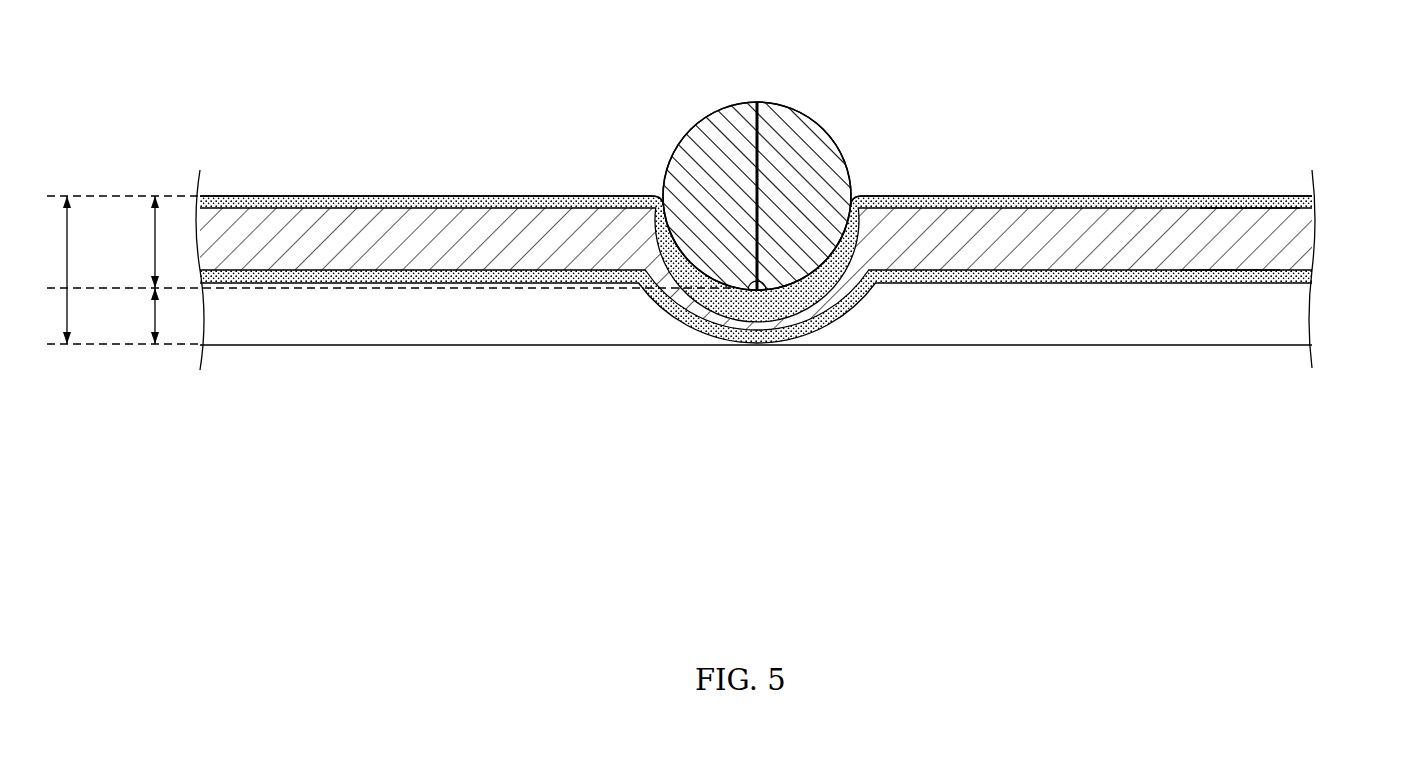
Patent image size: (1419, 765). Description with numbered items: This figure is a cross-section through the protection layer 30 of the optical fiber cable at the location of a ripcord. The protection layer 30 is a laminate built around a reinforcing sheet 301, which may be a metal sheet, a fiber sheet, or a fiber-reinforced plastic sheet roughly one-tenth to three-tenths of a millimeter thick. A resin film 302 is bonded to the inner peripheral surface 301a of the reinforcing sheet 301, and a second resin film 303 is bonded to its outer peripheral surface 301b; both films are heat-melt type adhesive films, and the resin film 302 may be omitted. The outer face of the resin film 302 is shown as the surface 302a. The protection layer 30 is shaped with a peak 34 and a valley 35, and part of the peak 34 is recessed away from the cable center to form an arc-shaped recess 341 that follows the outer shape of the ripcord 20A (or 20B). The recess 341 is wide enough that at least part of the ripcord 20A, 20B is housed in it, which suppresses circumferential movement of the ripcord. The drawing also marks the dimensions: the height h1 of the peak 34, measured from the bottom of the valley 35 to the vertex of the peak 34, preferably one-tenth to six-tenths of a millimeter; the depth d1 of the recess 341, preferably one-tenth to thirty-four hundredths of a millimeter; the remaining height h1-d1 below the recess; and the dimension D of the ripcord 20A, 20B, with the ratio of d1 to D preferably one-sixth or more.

The protection layer 30 is at (805, 255).
The resin film 302 is at (1295, 202).
The upper surface of layer 302 302a is at (1140, 196).
The reinforcing sheet 301 is at (1313, 237).
The inner peripheral surface 301a is at (1238, 208).
The outer peripheral surface 301b is at (1225, 271).
The resin film 303 is at (1313, 277).
The peak 34 is at (1072, 196).
The recess 341 is at (743, 277).
The valley 35 is at (1317, 330).
The ripcord 20A is at (803, 113).
The ripcord 20B is at (757, 196).
The dimension of the ripcord D is at (755, 158).
The height of the peak h1 is at (50, 270).
The depth of the recess d1 is at (139, 242).
The height difference h1-d1 is at (121, 316).